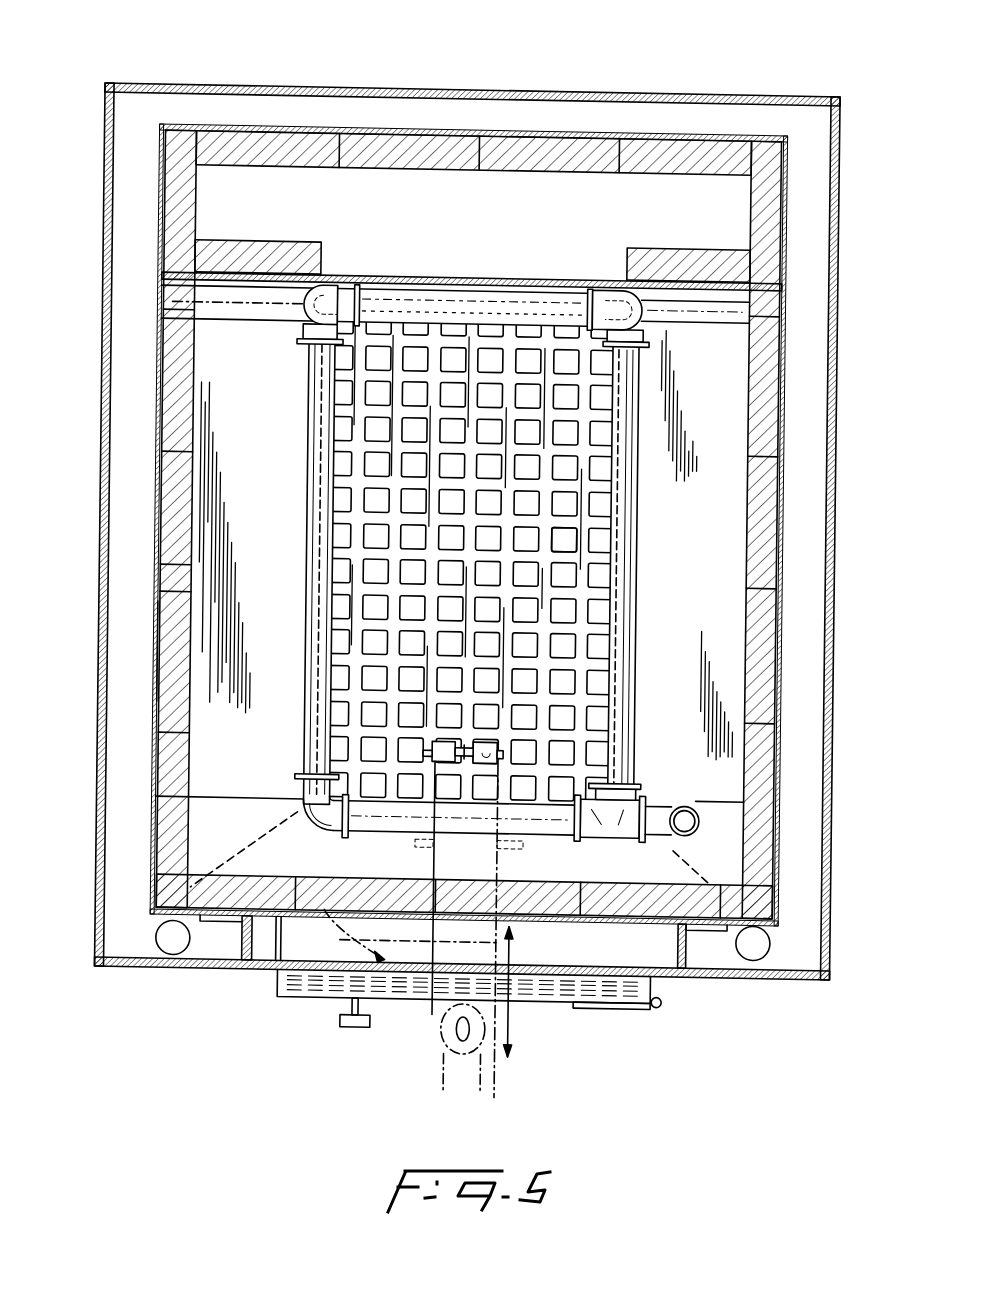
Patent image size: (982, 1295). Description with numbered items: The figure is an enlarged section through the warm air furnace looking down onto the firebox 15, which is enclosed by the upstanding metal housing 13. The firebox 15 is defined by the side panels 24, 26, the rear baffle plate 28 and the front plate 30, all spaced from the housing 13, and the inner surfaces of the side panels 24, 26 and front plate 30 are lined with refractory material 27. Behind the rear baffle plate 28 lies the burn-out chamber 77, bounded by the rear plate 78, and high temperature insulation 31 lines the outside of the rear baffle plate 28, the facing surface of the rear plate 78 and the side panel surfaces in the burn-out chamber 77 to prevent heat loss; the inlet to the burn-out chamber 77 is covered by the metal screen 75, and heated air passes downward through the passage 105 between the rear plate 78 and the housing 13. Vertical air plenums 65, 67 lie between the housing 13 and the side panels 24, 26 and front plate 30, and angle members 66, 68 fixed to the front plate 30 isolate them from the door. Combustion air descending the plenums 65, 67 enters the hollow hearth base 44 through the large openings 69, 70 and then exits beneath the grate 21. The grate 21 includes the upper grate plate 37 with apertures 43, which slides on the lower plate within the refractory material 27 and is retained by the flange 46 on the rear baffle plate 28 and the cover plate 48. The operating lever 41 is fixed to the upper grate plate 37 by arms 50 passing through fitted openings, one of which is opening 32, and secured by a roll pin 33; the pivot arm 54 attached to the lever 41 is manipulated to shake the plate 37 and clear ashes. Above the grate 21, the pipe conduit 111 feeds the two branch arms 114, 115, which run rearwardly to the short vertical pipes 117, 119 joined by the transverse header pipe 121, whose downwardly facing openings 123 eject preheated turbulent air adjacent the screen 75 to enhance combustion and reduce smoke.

The housing 13 is at (840, 298).
The firebox 15 is at (712, 368).
The grate 21 is at (644, 657).
The side panel 24 is at (164, 637).
The side panel 26 is at (788, 556).
The refractory material 27 is at (170, 516).
The rear baffle plate 28 is at (245, 300).
The front plate 30 is at (288, 916).
The high temperature insulation 31 is at (761, 137).
The fitted opening 32 is at (498, 748).
The roll pin 33 is at (488, 735).
The upper grate plate 37 is at (584, 440).
The operating lever 41 is at (499, 864).
The aperture 43 is at (577, 530).
The hearth base 44 is at (134, 865).
The flange 46 is at (740, 287).
The cover plate 48 is at (222, 797).
The arms 50 is at (443, 733).
The pivot arm 54 is at (347, 925).
The vertical air plenum 65 is at (135, 713).
The angle member 66 is at (253, 947).
The vertical air plenum 67 is at (818, 670).
The angle member 68 is at (700, 965).
The opening 69 is at (185, 949).
The opening 70 is at (767, 940).
The metal screen 75 is at (537, 269).
The burn-out chamber 77 is at (493, 182).
The rear plate 78 is at (245, 124).
The passage 105 is at (330, 107).
The pipe conduit 111 is at (671, 816).
The branch arm 114 is at (312, 549).
The branch arm 115 is at (646, 569).
The vertical pipe 117 is at (316, 314).
The vertical pipe 119 is at (644, 304).
The header pipe 121 is at (463, 293).
The openings 123 is at (397, 276).